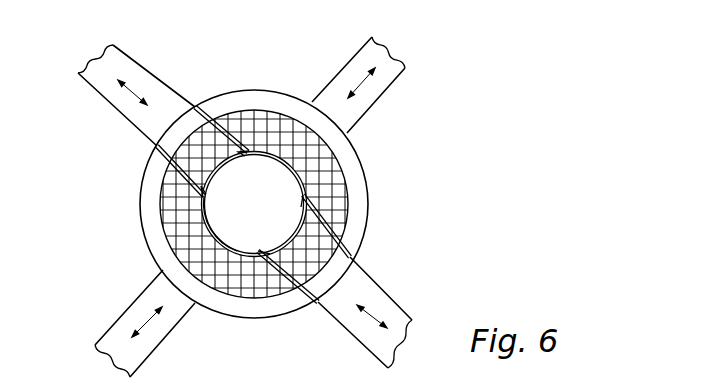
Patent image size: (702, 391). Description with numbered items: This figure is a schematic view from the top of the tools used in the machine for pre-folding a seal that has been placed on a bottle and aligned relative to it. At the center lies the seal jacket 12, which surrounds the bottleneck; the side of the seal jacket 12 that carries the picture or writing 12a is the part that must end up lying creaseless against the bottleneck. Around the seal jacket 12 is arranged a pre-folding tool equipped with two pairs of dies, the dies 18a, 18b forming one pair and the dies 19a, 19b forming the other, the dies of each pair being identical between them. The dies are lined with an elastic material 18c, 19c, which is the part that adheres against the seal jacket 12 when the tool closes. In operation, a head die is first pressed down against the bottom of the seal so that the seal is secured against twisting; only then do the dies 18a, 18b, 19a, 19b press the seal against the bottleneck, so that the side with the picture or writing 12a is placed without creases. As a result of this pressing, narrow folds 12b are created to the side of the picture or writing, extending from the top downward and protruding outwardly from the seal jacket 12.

The seal jacket 12 is at (228, 156).
The side with the picture or writing 12a is at (212, 228).
The narrow folds 12b is at (277, 268).
The die of pre-folding tool 18a is at (143, 85).
The die of pre-folding tool 18b is at (342, 261).
The elastic material 18c is at (183, 153).
The die of pre-folding tool 19a is at (213, 302).
The die of pre-folding tool 19b is at (273, 98).
The elastic material 19c is at (330, 173).